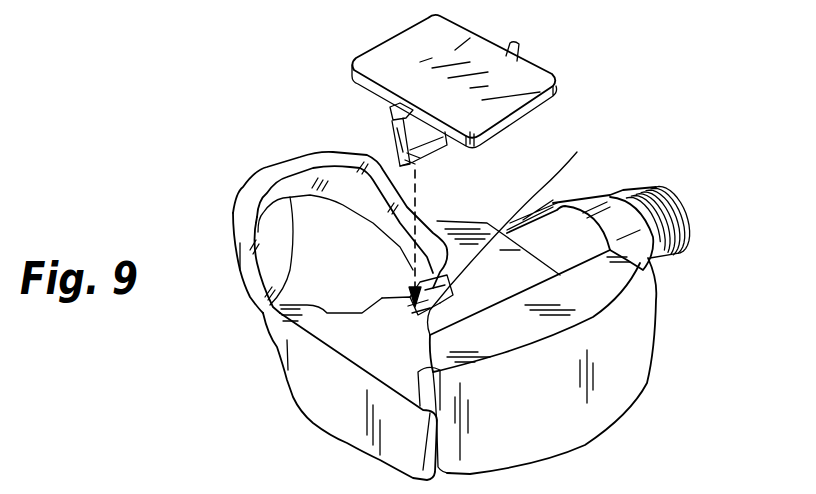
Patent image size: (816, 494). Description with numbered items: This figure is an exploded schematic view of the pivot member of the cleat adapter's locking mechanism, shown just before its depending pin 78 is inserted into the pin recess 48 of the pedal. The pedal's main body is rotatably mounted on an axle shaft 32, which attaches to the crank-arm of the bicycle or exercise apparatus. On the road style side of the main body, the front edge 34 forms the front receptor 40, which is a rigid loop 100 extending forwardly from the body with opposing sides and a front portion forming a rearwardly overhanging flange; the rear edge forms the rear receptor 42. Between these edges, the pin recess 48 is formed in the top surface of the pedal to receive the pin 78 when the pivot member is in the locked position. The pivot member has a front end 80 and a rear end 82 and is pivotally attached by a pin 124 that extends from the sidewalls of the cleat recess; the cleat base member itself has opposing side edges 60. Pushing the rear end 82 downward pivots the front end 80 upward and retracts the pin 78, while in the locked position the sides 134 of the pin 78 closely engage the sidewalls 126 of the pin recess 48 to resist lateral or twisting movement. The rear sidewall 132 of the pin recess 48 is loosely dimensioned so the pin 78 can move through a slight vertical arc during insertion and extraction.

The axle shaft 32 is at (617, 220).
The front edge 34 is at (263, 183).
The front receptor 40 is at (263, 320).
The rear receptor 42 is at (458, 383).
The pin recess 48 is at (516, 235).
The side edges 60 is at (340, 387).
The pin 78 is at (397, 133).
The front end of pivot member 80 is at (452, 52).
The rear end of pivot member 82 is at (500, 102).
The rigid loop 100 is at (300, 170).
The pin 124 is at (527, 50).
The sidewalls 126 is at (450, 290).
The rear sidewall 132 is at (428, 318).
The sides of pin 134 is at (418, 160).